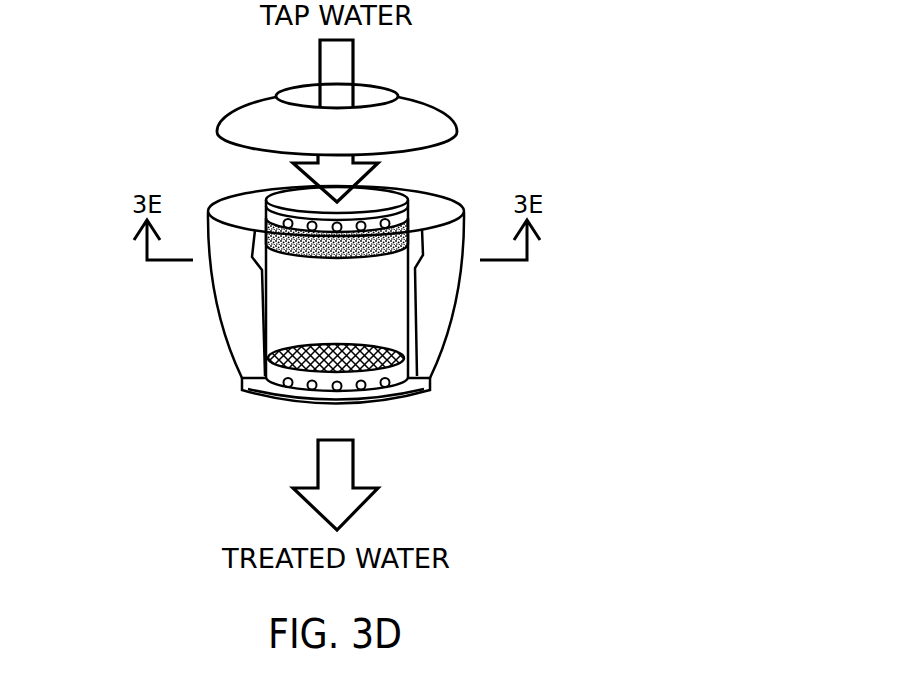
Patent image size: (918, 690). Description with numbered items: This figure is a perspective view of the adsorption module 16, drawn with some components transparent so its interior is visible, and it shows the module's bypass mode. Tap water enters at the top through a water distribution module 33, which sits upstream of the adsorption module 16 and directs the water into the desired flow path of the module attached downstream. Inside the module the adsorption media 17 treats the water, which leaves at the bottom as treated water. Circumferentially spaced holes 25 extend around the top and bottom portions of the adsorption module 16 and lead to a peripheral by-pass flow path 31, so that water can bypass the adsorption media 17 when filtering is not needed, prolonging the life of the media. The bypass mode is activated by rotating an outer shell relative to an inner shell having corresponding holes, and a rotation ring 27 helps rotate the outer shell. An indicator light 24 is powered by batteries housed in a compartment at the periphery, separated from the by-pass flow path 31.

The adsorption module 16 is at (175, 137).
The adsorption media 17 is at (380, 341).
The indicator light 24 is at (435, 382).
The holes 25 is at (402, 213).
The rotation ring 27 is at (273, 360).
The by-pass flow path 31 is at (413, 280).
The water distribution module 33 is at (447, 113).